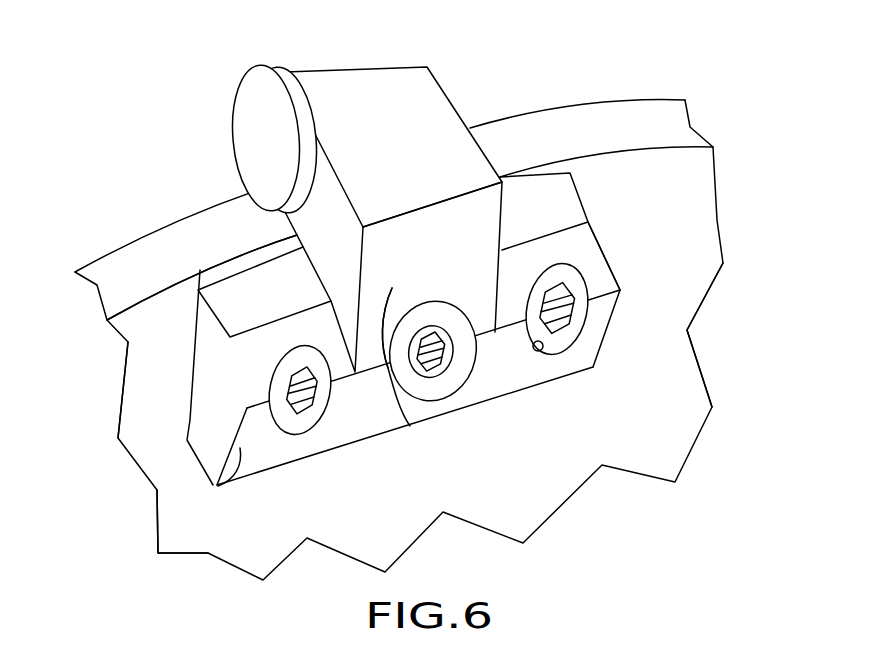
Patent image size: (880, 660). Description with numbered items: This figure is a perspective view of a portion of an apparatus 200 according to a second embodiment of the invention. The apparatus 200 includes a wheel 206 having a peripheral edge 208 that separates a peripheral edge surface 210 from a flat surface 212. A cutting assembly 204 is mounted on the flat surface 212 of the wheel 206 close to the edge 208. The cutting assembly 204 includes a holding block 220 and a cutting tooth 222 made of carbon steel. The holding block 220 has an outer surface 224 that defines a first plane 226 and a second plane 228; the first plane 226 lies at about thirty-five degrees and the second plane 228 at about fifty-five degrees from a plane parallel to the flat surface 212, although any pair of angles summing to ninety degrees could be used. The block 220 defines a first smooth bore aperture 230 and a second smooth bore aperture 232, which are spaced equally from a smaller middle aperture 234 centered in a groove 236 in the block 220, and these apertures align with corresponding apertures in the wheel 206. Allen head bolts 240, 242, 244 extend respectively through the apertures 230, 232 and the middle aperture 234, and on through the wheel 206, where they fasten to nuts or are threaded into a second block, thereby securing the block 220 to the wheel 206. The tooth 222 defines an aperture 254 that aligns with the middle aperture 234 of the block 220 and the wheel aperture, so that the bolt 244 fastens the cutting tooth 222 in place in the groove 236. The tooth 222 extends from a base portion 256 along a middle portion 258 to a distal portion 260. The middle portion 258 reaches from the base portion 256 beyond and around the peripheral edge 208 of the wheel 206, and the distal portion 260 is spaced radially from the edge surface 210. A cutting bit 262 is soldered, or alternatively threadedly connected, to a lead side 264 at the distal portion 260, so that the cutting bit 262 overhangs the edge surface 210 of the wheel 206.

The apparatus 200 is at (408, 296).
The cutting assembly 204 is at (423, 192).
The wheel 206 is at (408, 325).
The peripheral edge 208 is at (201, 272).
The peripheral edge surface 210 is at (158, 284).
The flat surface 212 is at (184, 394).
The holding block 220 is at (613, 327).
The cutting tooth 222 is at (453, 107).
The outer surface 224 is at (247, 483).
The first plane 226 is at (288, 366).
The second plane 228 is at (217, 485).
The first smooth bore aperture 230 is at (307, 437).
The second smooth bore aperture 232 is at (542, 352).
The third fastener 234 is at (436, 312).
The groove 236 is at (343, 424).
The Allen head bolt 240 is at (220, 486).
The Allen head bolt 242 is at (573, 340).
The Allen head bolt 244 is at (402, 335).
The aperture 254 is at (378, 417).
The base portion 256 is at (400, 415).
The middle portion 258 is at (486, 238).
The distal portion 260 is at (409, 153).
The cutting bit 262 is at (263, 64).
The lead side 264 is at (356, 247).